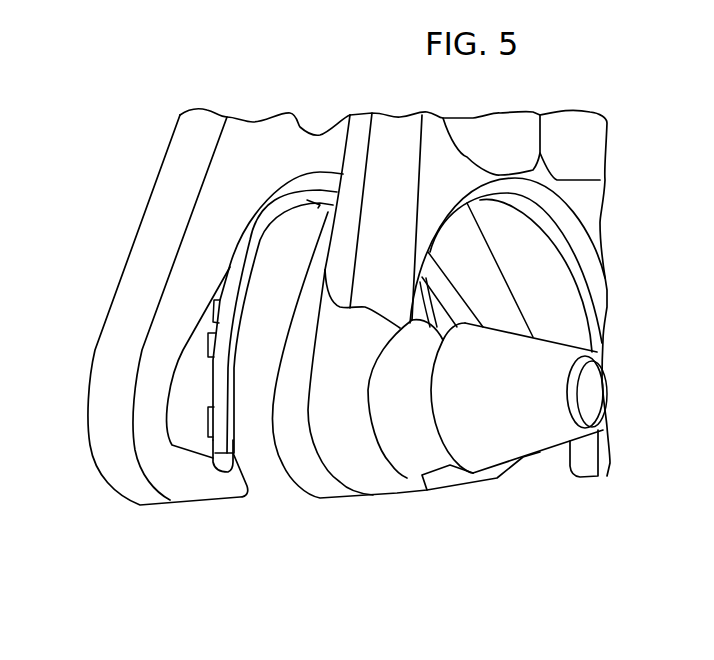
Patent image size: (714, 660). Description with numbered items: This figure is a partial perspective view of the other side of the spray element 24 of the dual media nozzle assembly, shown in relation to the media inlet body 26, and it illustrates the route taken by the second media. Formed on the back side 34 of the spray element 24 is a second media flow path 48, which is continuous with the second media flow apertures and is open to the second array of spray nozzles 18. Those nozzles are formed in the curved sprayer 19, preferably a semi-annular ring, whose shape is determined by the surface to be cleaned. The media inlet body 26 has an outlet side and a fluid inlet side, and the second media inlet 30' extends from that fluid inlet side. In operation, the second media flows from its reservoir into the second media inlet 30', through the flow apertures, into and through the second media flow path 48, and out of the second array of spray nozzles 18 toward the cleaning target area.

The second array of spray nozzles 18 is at (215, 303).
The curved sprayer 19 is at (243, 462).
The spray element 24 is at (125, 473).
The media inlet body 26 is at (362, 473).
The second media inlet 30' is at (536, 432).
The back side 34 is at (277, 153).
The second media flow path 48 is at (172, 403).